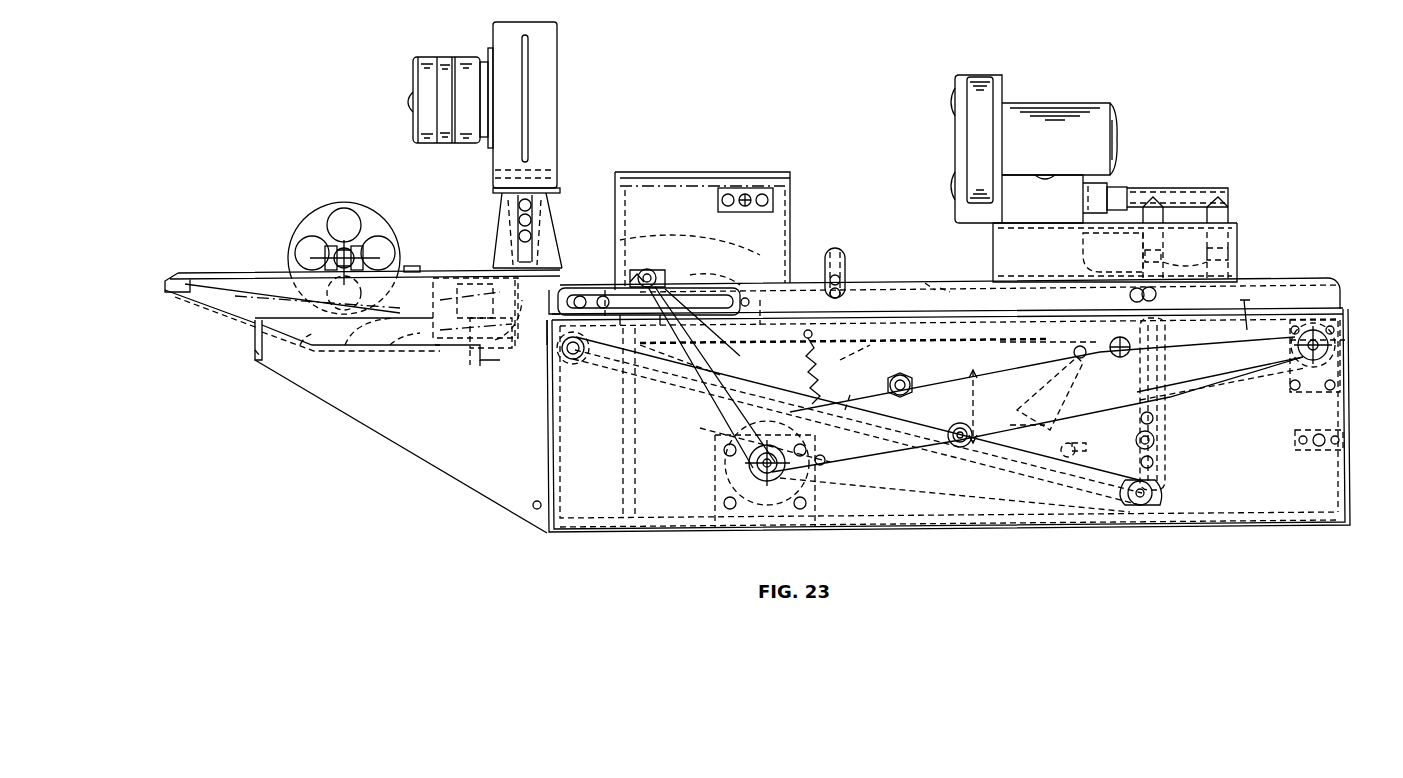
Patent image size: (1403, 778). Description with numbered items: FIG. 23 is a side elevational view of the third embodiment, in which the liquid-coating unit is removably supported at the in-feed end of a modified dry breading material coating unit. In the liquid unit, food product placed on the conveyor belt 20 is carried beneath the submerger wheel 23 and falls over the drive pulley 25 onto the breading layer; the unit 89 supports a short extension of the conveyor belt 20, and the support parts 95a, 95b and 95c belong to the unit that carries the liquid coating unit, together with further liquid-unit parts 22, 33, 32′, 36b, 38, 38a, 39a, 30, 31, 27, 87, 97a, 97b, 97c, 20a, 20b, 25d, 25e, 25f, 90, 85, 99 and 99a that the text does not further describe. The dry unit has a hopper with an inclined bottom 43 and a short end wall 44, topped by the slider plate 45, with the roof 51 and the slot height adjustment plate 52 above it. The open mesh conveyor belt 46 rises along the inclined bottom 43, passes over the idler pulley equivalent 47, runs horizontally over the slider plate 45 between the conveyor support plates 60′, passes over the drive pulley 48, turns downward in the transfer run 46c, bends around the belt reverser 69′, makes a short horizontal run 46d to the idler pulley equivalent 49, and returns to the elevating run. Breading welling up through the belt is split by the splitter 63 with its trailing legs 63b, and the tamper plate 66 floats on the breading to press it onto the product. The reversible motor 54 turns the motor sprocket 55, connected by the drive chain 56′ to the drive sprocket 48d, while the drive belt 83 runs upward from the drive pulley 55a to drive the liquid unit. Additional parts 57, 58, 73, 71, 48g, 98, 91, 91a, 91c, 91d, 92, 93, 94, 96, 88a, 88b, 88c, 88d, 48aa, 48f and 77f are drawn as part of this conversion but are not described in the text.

The table 22 is at (185, 283).
The submerger wheel 23 is at (304, 223).
The reel support bracket 33 is at (364, 256).
The guide 32′ is at (420, 266).
The support block 36b is at (470, 280).
The camera lens 38 is at (467, 143).
The camera bracket 38a is at (557, 230).
The bracket support 39a is at (508, 235).
The conveyor belt 20 is at (370, 331).
The guide 30 is at (406, 332).
The guide 31 is at (320, 332).
The bracket 87 is at (255, 339).
The pivot 97c is at (256, 357).
The pivot 97a is at (535, 507).
The pivot 97b is at (472, 370).
The side wing plate 95a is at (401, 446).
The plate 95b is at (455, 350).
The plate 95c is at (545, 330).
The guide 27 is at (455, 355).
The short end wall 44 is at (548, 345).
The idler pulley equivalent 47 is at (578, 360).
The conveyor belt 46 is at (855, 330).
The inclined bottom 43 is at (958, 472).
The electrical motor 54 is at (722, 503).
The drive sprocket 55 is at (758, 475).
The drive pulley 55a is at (778, 475).
The drive belt 83 is at (708, 427).
The roof 51 is at (690, 364).
The arm 90 is at (738, 356).
The unit 89 is at (692, 290).
The film path 20a is at (668, 283).
The film path 20b is at (745, 298).
The drive pulley 25 is at (655, 272).
The pivot 25d is at (648, 268).
The switch 25e is at (738, 188).
The pointer 25f is at (640, 268).
The splitter 63 is at (605, 290).
The trailing legs 63b is at (760, 300).
The control box 99 is at (790, 235).
The control panel 99a is at (774, 198).
The bracket 85 is at (847, 262).
The conveyor support plate 60′ is at (912, 283).
The tamper plate 66 is at (946, 288).
The rectangular plate 52 is at (816, 390).
The slider plate 45 is at (862, 350).
The pulley 57 is at (913, 385).
The pulley 58 is at (945, 434).
The drive chain 56′ is at (969, 406).
The bracket 73 is at (1030, 405).
The belt reverser 69′ is at (1061, 450).
The link 71 is at (1080, 452).
The guide rod 48g is at (1075, 348).
The motor 98 is at (1018, 103).
The conduit 91 is at (1167, 188).
The conduit part 91a is at (1143, 240).
The conduit part 91c is at (1145, 256).
The conduit part 91d is at (1207, 252).
The housing 92 is at (993, 247).
The coupling 93 is at (1207, 264).
The housing part 94 is at (1100, 272).
The rod 96 is at (1248, 300).
The frame 88a is at (950, 293).
The belt 88b is at (1242, 383).
The pulley 88c is at (1138, 447).
The bracket 88d is at (1158, 296).
The transfer run 46c is at (1156, 418).
The short horizontal run 46d is at (1158, 462).
The idler pulley equivalent 49 is at (1160, 490).
The drive pulley 48 is at (1330, 342).
The pulley flange 48aa is at (1291, 350).
The drive sprocket 48d is at (1335, 330).
The mounting plate 48f is at (1298, 393).
The switch 77f is at (1343, 437).